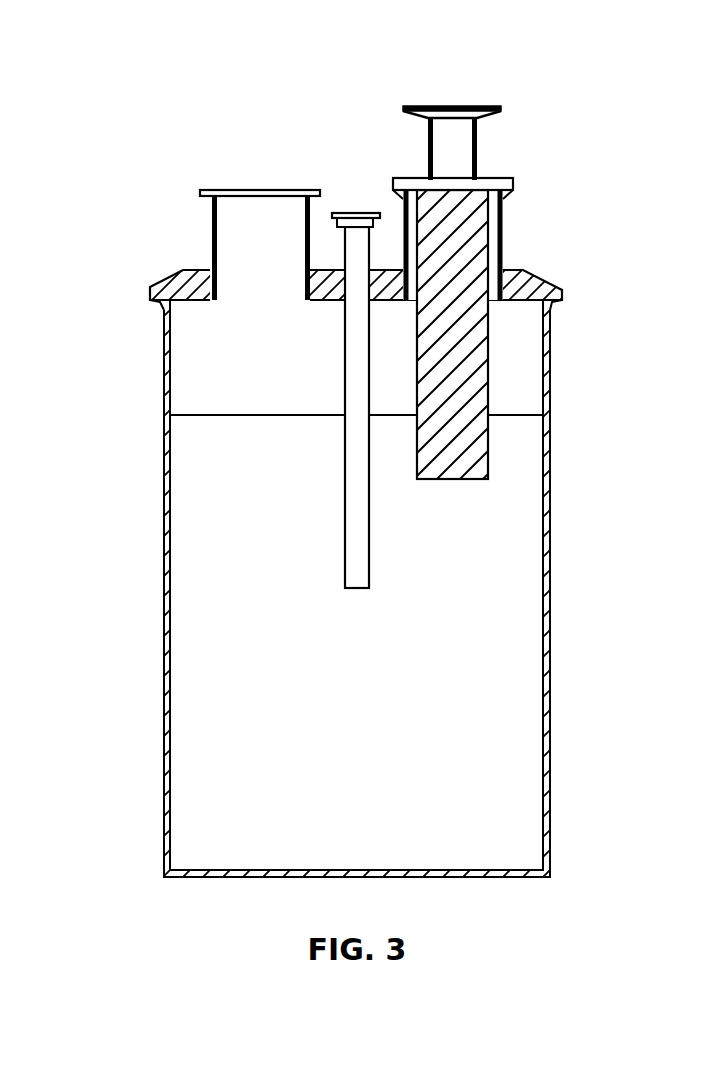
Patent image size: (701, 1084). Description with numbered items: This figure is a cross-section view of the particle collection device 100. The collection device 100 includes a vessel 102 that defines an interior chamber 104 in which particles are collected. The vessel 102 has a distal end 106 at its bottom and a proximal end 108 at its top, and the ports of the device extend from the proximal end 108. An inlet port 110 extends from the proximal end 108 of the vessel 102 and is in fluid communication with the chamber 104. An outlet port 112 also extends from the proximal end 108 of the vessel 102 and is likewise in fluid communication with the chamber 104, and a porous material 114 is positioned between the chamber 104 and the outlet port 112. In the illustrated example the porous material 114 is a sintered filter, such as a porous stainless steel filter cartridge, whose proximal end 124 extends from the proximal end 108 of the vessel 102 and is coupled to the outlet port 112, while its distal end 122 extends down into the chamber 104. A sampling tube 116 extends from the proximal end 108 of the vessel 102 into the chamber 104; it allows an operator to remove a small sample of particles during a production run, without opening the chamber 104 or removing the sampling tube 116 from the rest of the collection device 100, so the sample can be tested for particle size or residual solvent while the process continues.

The collection device 100 is at (603, 197).
The vessel 102 is at (165, 538).
The chamber 104 is at (208, 627).
The distal end 106 is at (198, 880).
The proximal end 108 is at (182, 272).
The inlet port 110 is at (262, 190).
The outlet port 112 is at (443, 103).
The porous material 114 is at (488, 388).
The sampling tube 116 is at (353, 213).
The distal end of the sintered filter 122 is at (453, 478).
The proximal end of the sintered filter 124 is at (458, 183).